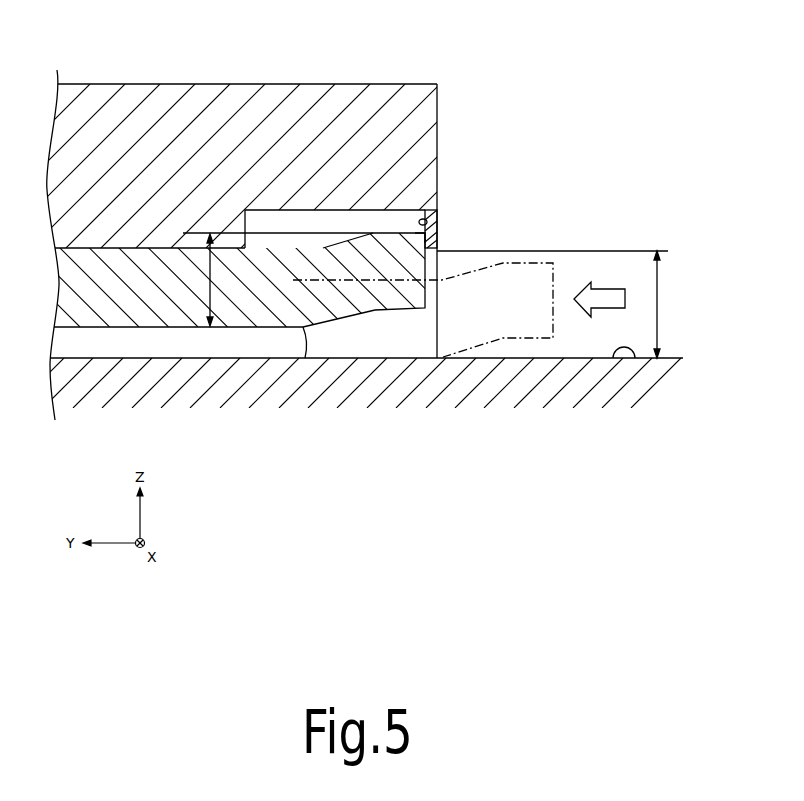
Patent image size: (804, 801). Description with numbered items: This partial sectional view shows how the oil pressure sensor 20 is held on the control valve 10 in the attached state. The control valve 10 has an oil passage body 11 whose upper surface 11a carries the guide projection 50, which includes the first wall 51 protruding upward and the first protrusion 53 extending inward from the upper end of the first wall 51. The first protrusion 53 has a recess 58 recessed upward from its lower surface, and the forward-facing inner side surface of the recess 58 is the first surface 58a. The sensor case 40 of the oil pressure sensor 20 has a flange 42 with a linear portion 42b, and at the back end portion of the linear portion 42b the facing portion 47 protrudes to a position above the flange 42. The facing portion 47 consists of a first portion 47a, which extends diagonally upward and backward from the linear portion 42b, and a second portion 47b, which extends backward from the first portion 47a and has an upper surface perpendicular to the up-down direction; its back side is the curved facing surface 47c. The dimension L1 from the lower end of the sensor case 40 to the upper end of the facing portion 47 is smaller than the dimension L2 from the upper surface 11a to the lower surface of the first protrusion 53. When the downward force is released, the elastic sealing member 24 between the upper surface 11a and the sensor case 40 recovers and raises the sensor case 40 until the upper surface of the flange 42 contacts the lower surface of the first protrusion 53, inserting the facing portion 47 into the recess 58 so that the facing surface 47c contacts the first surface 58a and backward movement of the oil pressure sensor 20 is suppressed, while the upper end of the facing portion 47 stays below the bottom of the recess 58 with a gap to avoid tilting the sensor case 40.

The control valve 10 is at (543, 420).
The oil passage body 11 is at (583, 383).
The upper surface 11a is at (633, 362).
The oil pressure sensor 20 is at (117, 242).
The sealing member 24 is at (110, 343).
The sensor case 40 is at (261, 168).
The flange 42 is at (305, 342).
The linear portion 42b is at (283, 393).
The facing portion 47 is at (369, 334).
The first portion 47a is at (372, 318).
The second portion 47b is at (423, 310).
The facing surface 47c is at (437, 246).
The guide projection 50 is at (430, 78).
The first wall 51 is at (445, 263).
The first protrusion 53 is at (430, 147).
The recess 58 is at (270, 210).
The first surface 58a is at (428, 220).
The dimension L1 is at (207, 303).
The dimension L2 is at (662, 300).